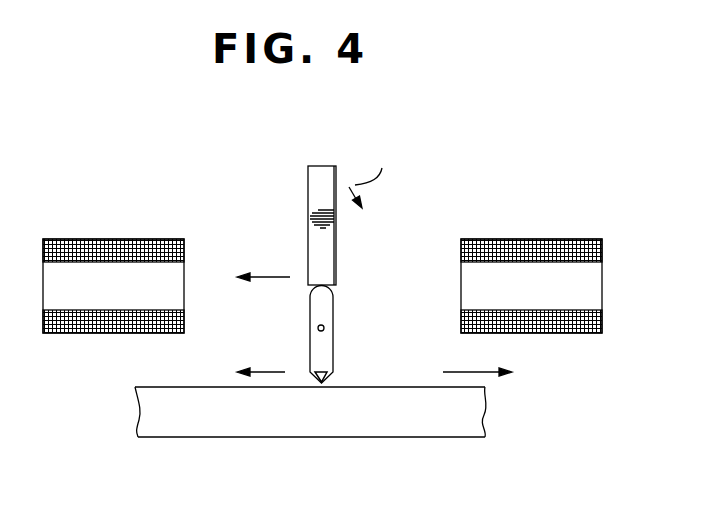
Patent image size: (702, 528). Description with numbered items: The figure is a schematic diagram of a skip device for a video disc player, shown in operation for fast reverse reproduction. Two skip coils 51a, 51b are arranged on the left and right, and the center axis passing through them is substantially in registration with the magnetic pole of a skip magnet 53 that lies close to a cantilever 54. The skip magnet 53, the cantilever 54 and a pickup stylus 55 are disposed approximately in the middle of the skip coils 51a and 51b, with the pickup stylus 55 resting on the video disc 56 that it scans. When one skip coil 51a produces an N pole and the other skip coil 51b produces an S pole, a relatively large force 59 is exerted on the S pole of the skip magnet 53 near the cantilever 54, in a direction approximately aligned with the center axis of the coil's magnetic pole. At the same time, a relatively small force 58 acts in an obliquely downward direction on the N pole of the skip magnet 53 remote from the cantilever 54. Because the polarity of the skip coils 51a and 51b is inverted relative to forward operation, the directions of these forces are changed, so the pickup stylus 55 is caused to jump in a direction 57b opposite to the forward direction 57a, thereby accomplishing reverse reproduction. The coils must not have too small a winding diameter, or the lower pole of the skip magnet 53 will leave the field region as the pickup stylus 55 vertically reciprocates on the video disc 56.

The skip coil 51a is at (555, 239).
The skip coil 51b is at (93, 239).
The skip magnet 53 is at (327, 166).
The cantilever 54 is at (334, 310).
The pickup stylus 55 is at (335, 386).
The video disc 56 is at (447, 437).
The forward direction 57a is at (498, 376).
The direction opposite to the forward direction 57b is at (266, 371).
The relatively small force 58 is at (374, 174).
The relatively large force 59 is at (270, 276).